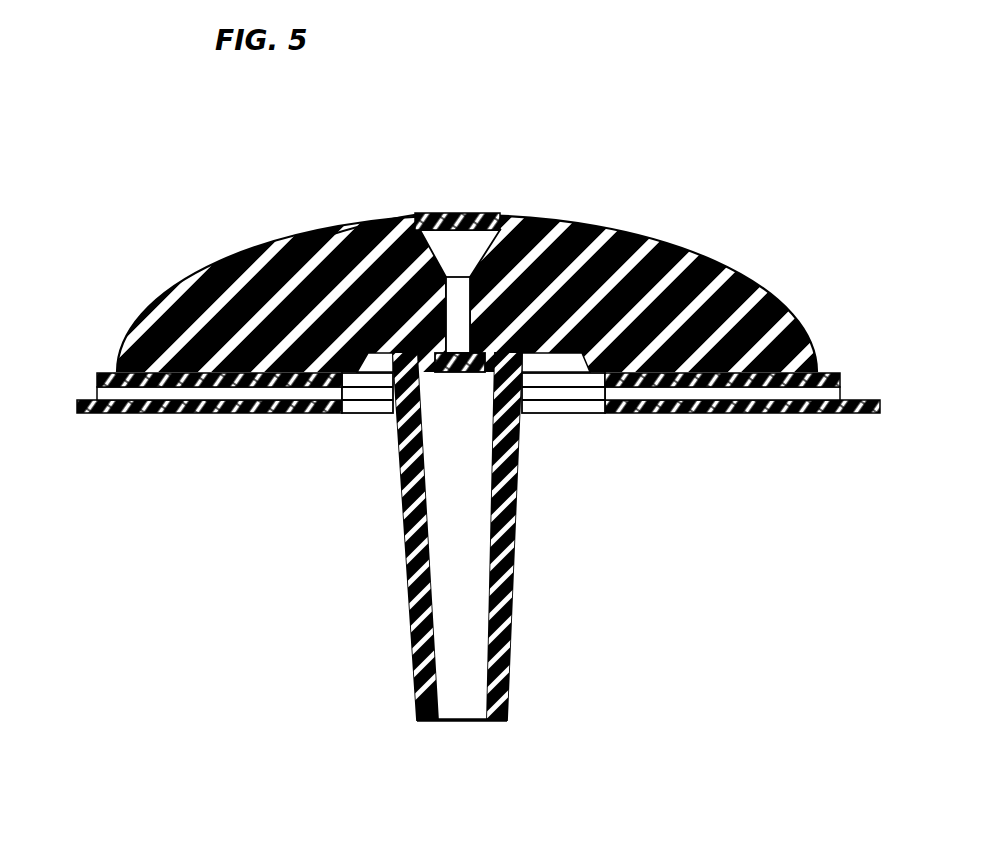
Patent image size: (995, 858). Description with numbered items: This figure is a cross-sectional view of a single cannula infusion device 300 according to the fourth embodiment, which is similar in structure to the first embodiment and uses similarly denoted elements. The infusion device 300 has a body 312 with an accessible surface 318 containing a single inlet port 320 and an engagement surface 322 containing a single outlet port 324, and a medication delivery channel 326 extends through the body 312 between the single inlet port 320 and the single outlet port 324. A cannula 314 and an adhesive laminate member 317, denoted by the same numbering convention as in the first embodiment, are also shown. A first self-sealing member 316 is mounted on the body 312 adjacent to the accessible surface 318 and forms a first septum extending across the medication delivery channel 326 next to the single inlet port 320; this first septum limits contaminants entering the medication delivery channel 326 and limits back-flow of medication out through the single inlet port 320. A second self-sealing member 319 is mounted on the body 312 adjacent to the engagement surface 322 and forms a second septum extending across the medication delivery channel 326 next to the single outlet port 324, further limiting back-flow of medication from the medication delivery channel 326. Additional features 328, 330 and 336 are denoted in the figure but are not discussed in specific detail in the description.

The infusion device 300 is at (253, 178).
The body 312 is at (712, 252).
The cannula 314 is at (510, 572).
The first self-sealing member 316 is at (474, 252).
The adhesive laminate member 317 is at (72, 373).
The accessible surface 318 is at (227, 255).
The second self-sealing member 319 is at (470, 375).
The single inlet port 320 is at (438, 200).
The engagement surface 322 is at (173, 375).
The single outlet port 324 is at (448, 389).
The medication delivery channel 326 is at (463, 292).
The bottom opening 328 is at (450, 703).
The cap 330 is at (449, 232).
The outer surface 336 is at (363, 203).